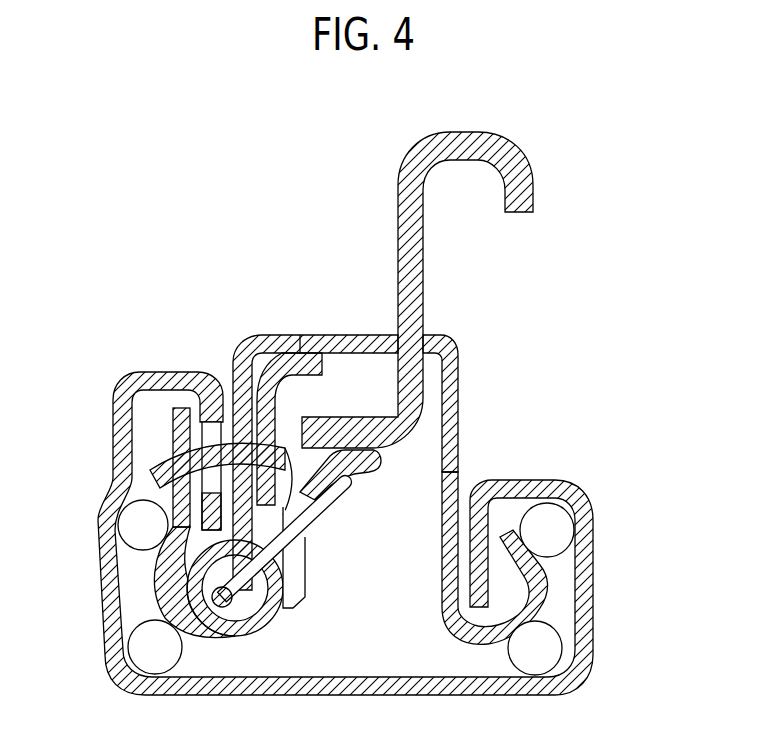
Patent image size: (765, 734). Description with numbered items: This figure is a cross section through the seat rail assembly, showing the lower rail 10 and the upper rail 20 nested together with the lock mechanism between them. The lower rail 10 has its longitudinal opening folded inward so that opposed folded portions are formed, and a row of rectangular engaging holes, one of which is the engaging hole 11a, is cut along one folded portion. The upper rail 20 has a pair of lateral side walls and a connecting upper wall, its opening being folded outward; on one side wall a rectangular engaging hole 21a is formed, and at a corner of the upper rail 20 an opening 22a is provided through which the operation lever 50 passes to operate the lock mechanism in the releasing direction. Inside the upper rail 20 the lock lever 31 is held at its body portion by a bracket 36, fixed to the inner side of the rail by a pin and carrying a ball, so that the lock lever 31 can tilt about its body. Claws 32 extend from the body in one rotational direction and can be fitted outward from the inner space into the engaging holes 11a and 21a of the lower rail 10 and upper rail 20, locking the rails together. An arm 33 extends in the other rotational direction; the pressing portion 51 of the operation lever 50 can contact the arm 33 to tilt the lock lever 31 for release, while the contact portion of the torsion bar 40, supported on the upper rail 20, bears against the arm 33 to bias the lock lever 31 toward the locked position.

The lower rail 10 is at (371, 516).
The rectangular engaging hole 11a is at (200, 373).
The upper rail 20 is at (332, 434).
The rectangular engaging hole 21a is at (226, 420).
The opening 22a is at (452, 380).
The lock lever 31 is at (293, 585).
The claws 32 is at (158, 475).
The arm 33 is at (368, 462).
The bracket 36 is at (308, 363).
The torsion bar 40 is at (315, 520).
The operation lever 50 is at (461, 287).
The pressing portion 51 is at (413, 252).